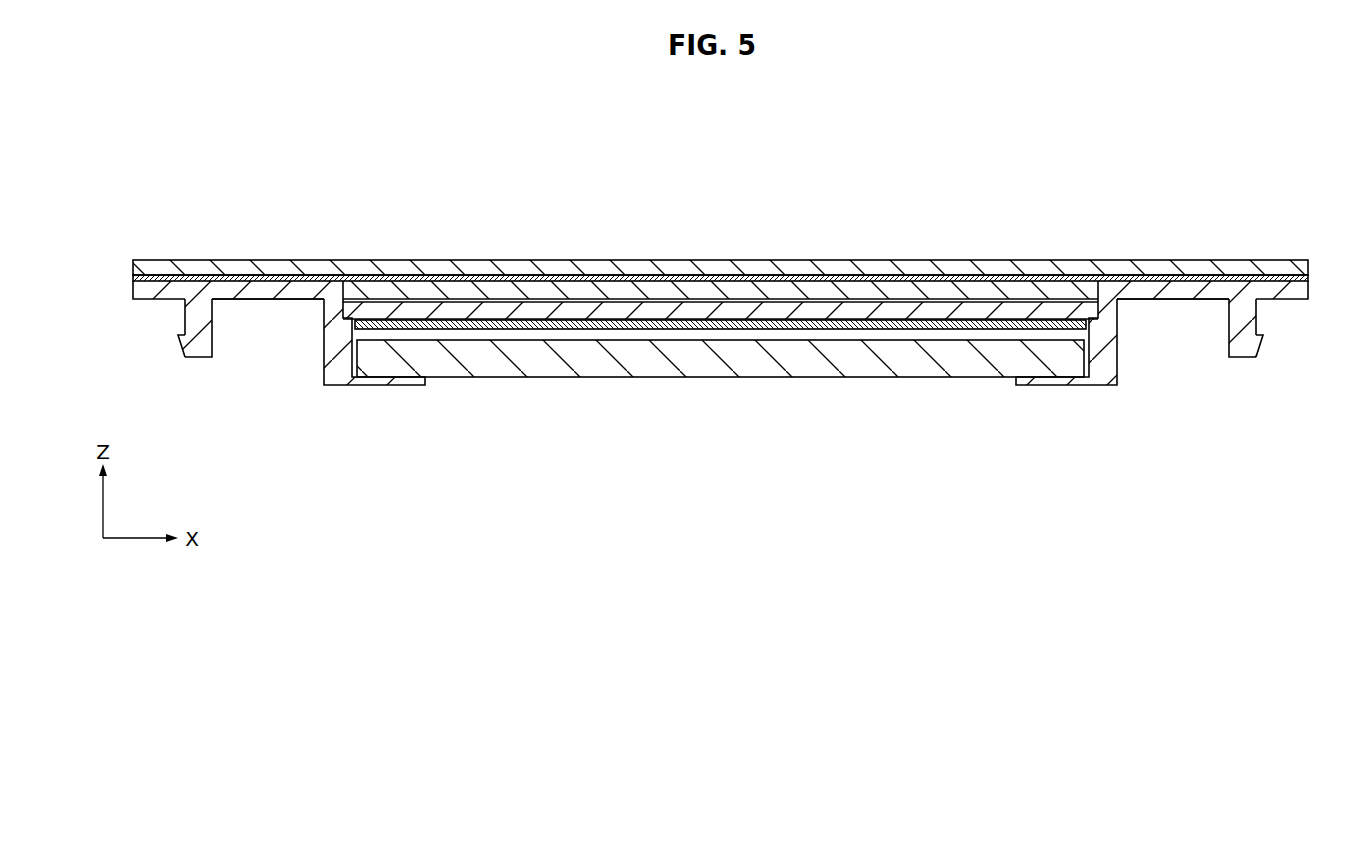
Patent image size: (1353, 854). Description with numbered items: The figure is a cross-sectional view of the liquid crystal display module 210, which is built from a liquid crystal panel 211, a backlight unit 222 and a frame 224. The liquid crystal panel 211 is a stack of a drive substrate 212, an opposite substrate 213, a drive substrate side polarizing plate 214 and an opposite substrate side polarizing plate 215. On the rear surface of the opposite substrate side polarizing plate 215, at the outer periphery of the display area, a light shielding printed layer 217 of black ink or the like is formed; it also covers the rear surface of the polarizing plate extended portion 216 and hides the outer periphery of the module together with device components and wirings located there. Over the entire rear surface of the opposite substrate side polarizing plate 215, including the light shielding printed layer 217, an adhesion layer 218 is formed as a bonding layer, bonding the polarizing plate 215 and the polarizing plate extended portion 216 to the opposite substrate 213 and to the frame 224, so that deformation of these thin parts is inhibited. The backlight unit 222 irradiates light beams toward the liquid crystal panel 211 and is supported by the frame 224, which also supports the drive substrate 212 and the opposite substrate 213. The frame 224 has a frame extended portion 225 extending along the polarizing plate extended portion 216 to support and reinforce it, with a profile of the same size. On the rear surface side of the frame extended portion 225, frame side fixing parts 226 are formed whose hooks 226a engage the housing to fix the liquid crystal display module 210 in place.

The liquid crystal display module 210 is at (730, 102).
The liquid crystal panel 211 is at (630, 258).
The drive substrate 212 is at (982, 312).
The opposite substrate 213 is at (892, 301).
The drive substrate side polarizing plate 214 is at (536, 334).
The opposite substrate side polarizing plate 215 is at (735, 292).
The polarizing plate extended portion 216 is at (265, 279).
The light shielding printed layer 217 is at (185, 288).
The adhesion layer 218 is at (822, 313).
The backlight unit 222 is at (690, 368).
The frame 224 is at (343, 380).
The frame extended portion 225 is at (272, 300).
The frame side fixing parts 226 is at (186, 318).
The hooks 226a is at (200, 352).